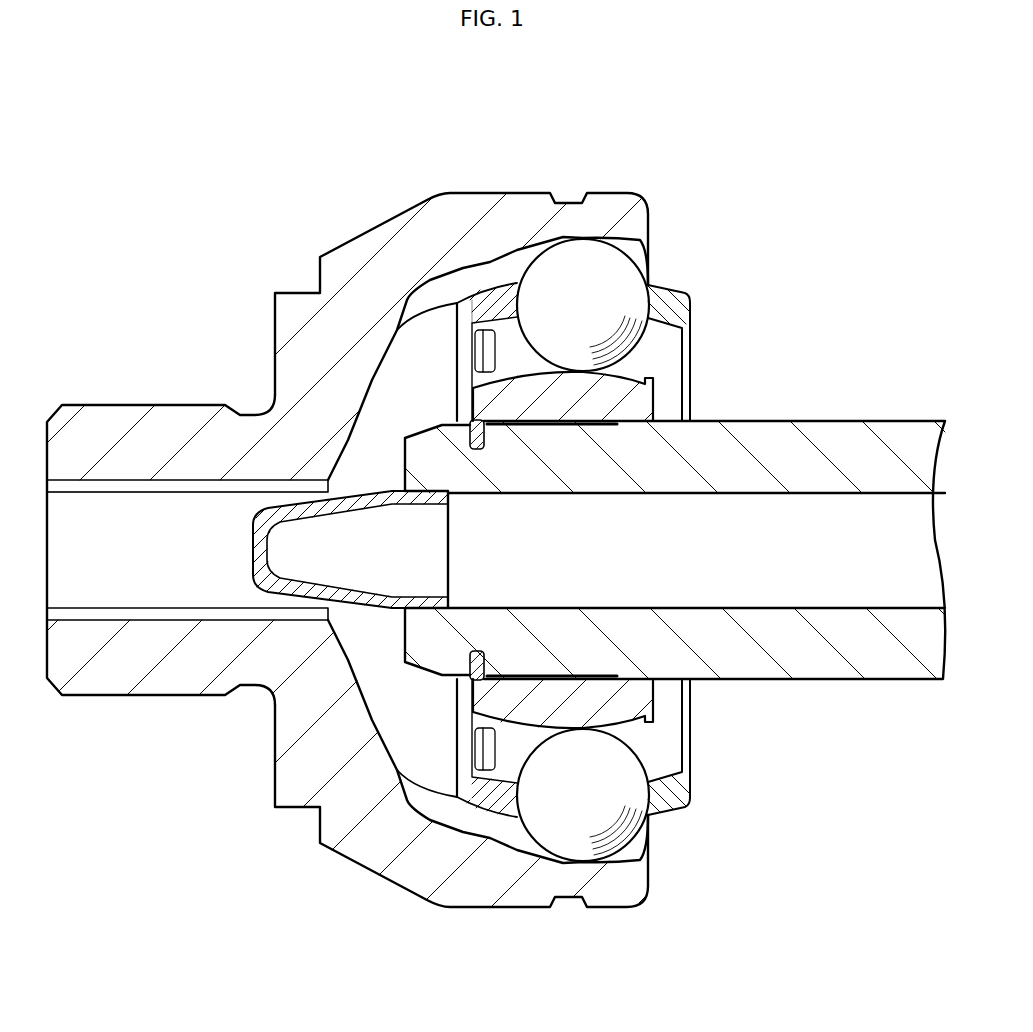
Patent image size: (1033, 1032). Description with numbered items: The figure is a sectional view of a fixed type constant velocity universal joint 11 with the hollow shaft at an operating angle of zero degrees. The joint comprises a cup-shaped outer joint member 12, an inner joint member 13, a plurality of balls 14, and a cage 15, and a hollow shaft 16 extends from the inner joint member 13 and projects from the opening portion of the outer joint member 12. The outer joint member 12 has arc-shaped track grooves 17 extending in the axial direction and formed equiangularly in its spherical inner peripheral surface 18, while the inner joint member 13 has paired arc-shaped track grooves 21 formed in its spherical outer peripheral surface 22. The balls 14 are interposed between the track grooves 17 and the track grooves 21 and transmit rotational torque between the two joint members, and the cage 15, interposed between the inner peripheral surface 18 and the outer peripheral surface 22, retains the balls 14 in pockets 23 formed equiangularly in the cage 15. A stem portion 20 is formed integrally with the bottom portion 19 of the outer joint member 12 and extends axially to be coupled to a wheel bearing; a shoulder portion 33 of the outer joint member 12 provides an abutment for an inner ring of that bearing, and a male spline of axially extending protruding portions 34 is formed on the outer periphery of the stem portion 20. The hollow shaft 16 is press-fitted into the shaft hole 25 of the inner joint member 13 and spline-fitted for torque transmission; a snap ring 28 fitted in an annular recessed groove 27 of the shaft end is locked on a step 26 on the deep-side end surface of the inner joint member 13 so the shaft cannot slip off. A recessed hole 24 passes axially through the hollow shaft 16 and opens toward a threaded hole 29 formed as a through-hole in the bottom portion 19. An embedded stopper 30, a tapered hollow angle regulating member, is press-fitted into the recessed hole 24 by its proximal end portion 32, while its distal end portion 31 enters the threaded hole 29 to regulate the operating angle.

The constant velocity universal joint 11 is at (263, 241).
The outer joint member 12 is at (419, 191).
The inner joint member 13 is at (667, 683).
The balls 14 is at (634, 251).
The cage 15 is at (585, 585).
The hollow shaft 16 is at (837, 419).
The track grooves 17 is at (492, 253).
The spherical inner peripheral surface 18 is at (497, 802).
The bottom portion 19 is at (260, 685).
The stem portion 20 is at (150, 440).
The track grooves 21 is at (652, 366).
The spherical outer peripheral surface 22 is at (472, 323).
The pockets 23 is at (650, 820).
The recessed hole 24 is at (820, 592).
The shaft hole 25 is at (590, 674).
The step 26 is at (462, 680).
The annular recessed groove 27 is at (480, 652).
The snap ring 28 is at (470, 438).
The threaded hole 29 is at (137, 613).
The embedded stopper 30 is at (374, 611).
The distal end portion 31 is at (305, 503).
The proximal end portion 32 is at (428, 590).
The shoulder portion 33 is at (283, 317).
The protruding portions 34 is at (93, 405).